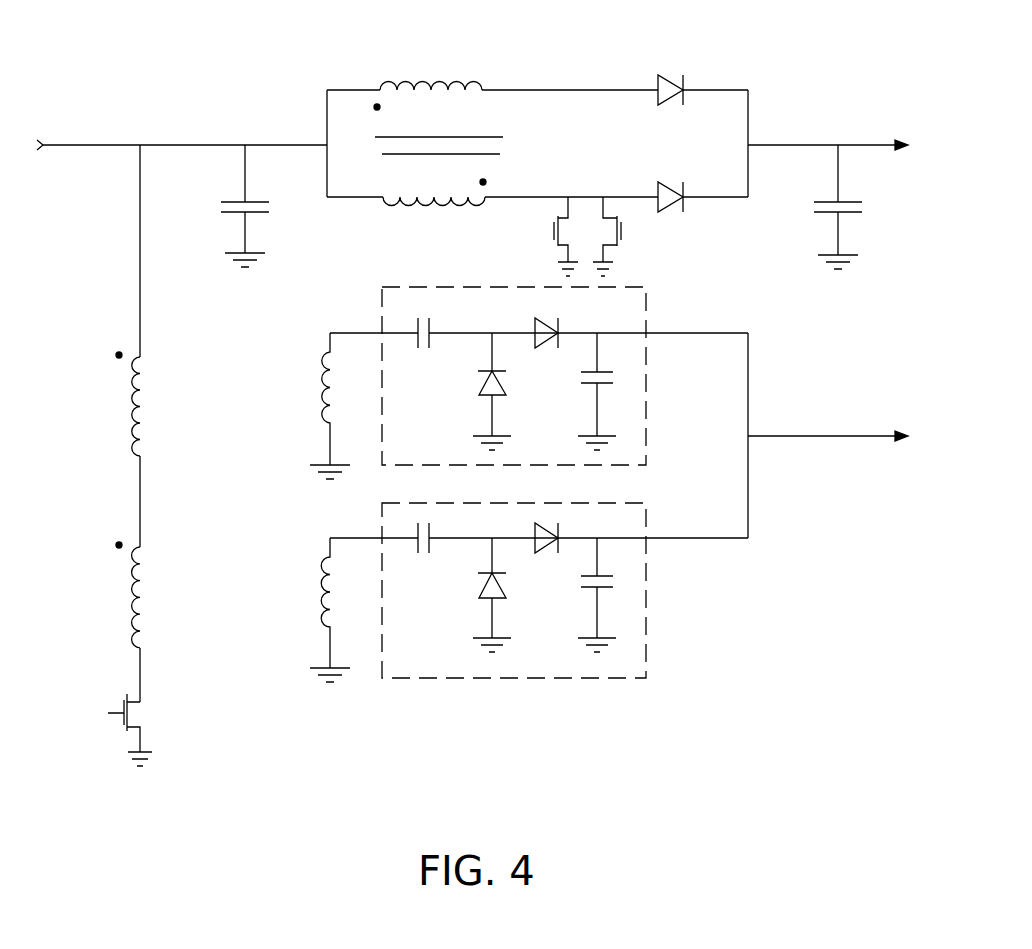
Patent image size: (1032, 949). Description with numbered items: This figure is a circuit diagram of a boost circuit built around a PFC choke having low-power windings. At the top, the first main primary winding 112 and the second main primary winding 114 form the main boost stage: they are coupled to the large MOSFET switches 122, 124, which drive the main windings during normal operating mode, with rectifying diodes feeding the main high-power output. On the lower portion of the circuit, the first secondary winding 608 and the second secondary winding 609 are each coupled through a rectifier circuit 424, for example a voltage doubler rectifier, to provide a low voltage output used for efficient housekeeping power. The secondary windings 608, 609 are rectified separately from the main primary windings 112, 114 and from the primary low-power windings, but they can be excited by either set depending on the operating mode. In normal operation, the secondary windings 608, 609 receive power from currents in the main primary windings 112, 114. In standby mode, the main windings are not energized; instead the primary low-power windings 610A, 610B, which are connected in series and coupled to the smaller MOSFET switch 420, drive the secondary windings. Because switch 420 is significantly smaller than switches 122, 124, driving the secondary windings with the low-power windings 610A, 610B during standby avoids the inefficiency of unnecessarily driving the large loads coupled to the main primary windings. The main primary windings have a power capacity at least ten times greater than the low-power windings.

The main primary winding L1 112 is at (472, 83).
The main primary winding L2 114 is at (383, 197).
The switch Q1 122 is at (554, 232).
The switch Q2 124 is at (621, 232).
The MOSFET switch Q3 420 is at (140, 725).
The rectifier circuit 424 is at (646, 397).
The secondary winding L4 608 is at (322, 383).
The secondary winding L5 609 is at (322, 588).
The primary low-power winding L3A 610A is at (138, 408).
The primary low-power winding L3B 610B is at (138, 580).